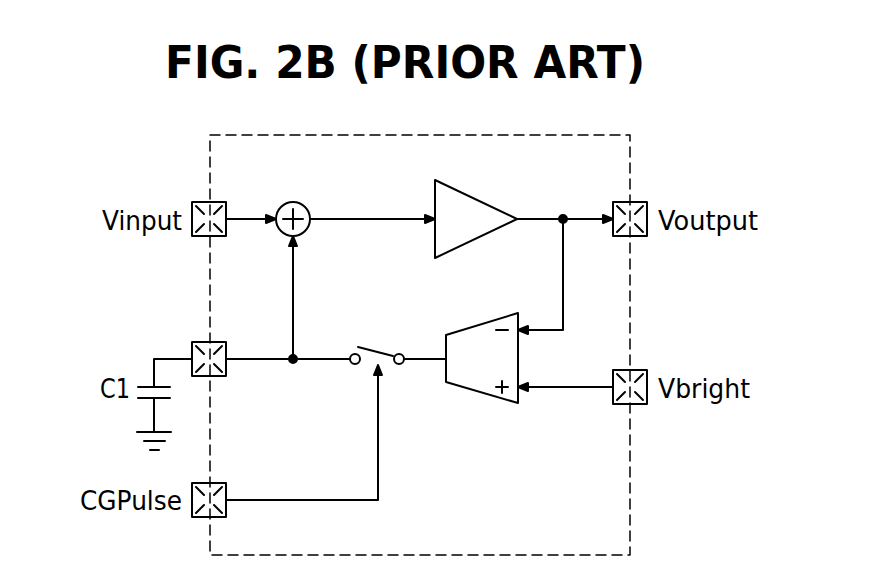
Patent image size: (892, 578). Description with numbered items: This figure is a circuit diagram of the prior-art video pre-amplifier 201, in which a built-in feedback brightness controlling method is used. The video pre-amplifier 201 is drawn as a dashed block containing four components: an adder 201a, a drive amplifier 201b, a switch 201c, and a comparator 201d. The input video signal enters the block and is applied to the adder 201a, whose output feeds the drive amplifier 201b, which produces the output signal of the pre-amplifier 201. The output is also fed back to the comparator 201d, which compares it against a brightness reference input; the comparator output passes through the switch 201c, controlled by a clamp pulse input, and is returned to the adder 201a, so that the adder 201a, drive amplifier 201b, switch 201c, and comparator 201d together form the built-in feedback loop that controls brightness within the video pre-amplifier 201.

The video pre-amplifier 201 is at (613, 162).
The adder 201a is at (293, 200).
The drive amplifier 201b is at (497, 185).
The switch 201c is at (378, 340).
The comparator 201d is at (473, 393).